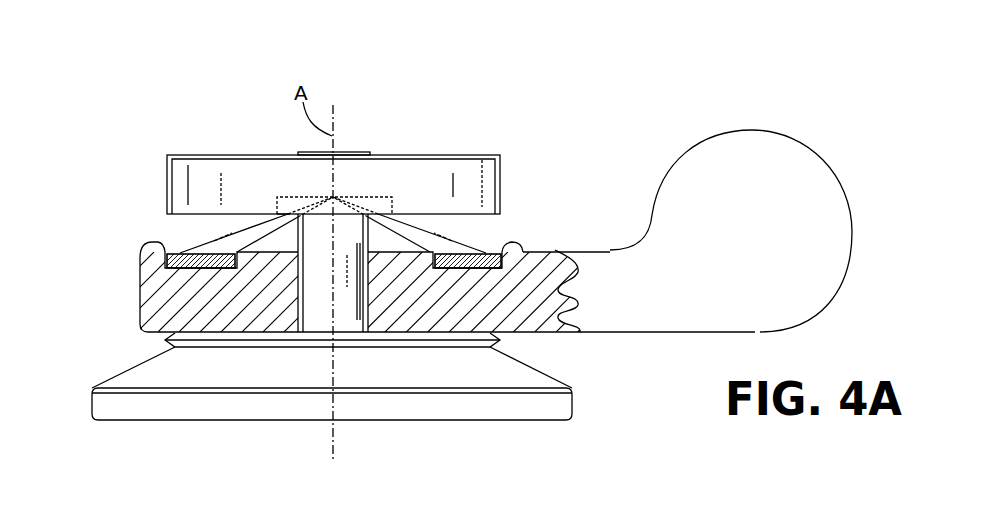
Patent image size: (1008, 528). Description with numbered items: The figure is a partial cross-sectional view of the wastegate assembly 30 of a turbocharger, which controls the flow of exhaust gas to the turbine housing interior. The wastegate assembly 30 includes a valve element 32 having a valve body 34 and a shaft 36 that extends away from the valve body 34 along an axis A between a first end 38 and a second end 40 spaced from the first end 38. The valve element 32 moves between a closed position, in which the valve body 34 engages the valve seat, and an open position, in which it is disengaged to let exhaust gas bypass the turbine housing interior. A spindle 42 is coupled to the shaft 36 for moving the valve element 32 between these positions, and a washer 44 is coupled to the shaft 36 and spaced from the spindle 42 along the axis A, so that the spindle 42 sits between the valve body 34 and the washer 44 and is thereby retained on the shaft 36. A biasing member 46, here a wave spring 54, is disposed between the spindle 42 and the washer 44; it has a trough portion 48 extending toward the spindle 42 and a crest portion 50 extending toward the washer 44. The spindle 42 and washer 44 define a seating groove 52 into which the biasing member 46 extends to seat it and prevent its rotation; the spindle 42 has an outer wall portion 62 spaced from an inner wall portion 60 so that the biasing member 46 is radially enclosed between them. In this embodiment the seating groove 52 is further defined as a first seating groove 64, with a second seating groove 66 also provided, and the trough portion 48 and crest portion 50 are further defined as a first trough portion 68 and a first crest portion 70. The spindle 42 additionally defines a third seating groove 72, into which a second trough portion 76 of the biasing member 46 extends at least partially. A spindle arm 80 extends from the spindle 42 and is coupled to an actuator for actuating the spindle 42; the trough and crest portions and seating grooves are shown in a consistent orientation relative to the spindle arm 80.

The wastegate assembly 30 is at (139, 88).
The valve element 32 is at (125, 362).
The valve body 34 is at (330, 365).
The shaft 36 is at (346, 242).
The first end 38 is at (338, 315).
The second end 40 is at (343, 152).
The spindle 42 is at (140, 302).
The washer 44 is at (466, 172).
The biasing member 46 is at (405, 199).
The trough portion 48 is at (341, 193).
The crest portion 50 is at (306, 151).
The seating groove 52 is at (332, 239).
The wave spring 54 is at (455, 252).
The inner wall portion 60 is at (272, 265).
The outer wall portion 62 is at (135, 258).
The first seating groove 64 is at (167, 253).
The second seating groove 66 is at (277, 213).
The first trough portion 68 is at (183, 253).
The first crest portion 70 is at (330, 198).
The third seating groove 72 is at (518, 252).
The second trough portion 76 is at (549, 262).
The spindle arm 80 is at (758, 167).